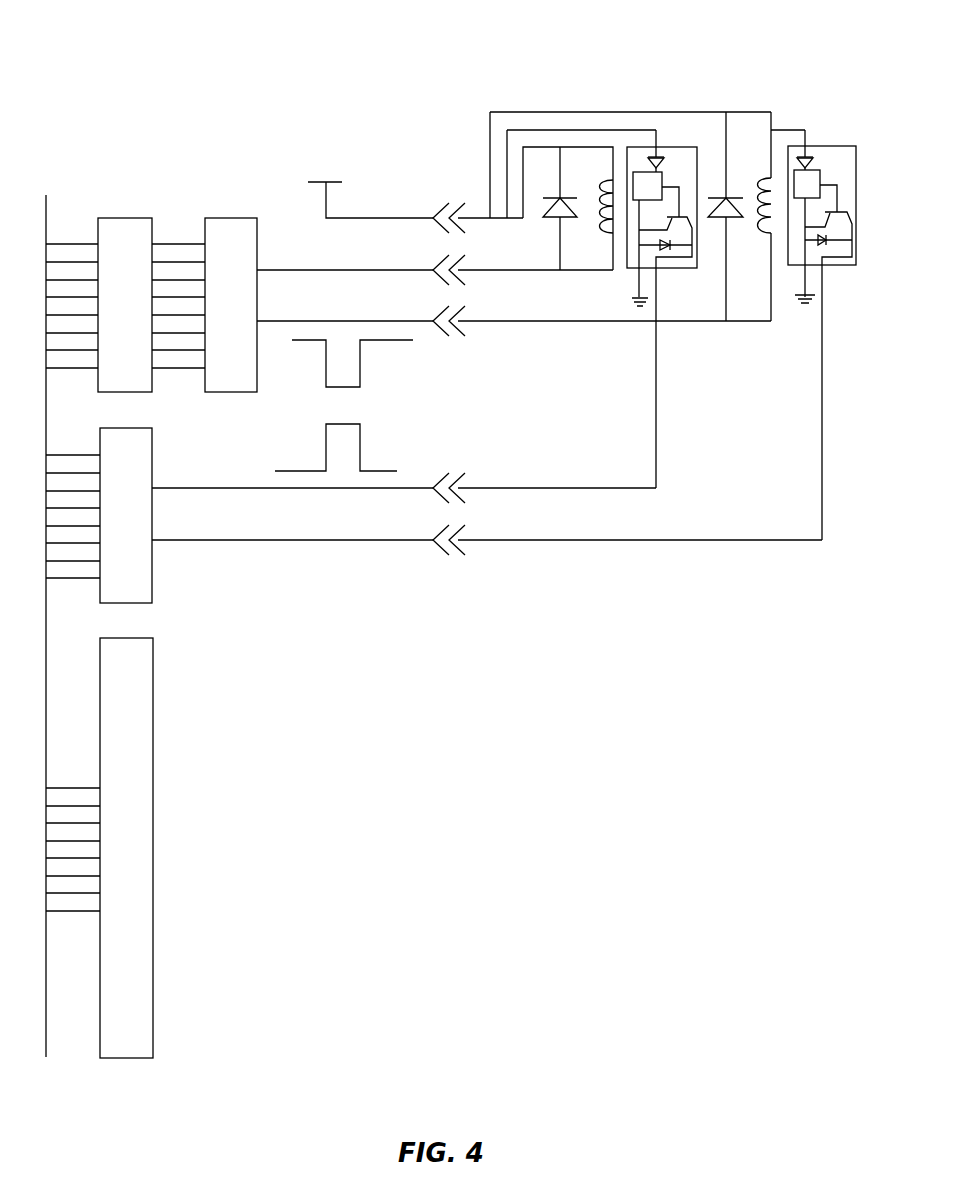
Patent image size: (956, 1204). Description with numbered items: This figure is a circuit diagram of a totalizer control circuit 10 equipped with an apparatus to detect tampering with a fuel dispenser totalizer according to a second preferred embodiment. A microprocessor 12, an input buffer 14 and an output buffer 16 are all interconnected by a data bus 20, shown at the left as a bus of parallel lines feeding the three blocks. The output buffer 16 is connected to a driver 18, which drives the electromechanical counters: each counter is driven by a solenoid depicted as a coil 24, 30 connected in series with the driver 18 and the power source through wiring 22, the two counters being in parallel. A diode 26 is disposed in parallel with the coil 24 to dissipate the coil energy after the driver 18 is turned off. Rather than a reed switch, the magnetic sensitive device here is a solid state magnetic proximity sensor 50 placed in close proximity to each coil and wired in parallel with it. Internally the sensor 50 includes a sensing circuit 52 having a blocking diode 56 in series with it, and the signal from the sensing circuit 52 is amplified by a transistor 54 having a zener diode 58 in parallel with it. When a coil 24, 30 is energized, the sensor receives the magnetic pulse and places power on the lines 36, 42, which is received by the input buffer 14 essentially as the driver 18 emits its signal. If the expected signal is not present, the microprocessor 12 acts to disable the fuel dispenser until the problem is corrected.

The totalizer control circuit 10 is at (145, 66).
The microprocessor 12 is at (152, 712).
The input buffer 14 is at (152, 462).
The output buffer 16 is at (117, 218).
The driver 18 is at (220, 218).
The data bus 20 is at (45, 218).
The wiring 22 is at (378, 218).
The coil 24 is at (597, 190).
The diode 26 is at (546, 210).
The coil 30 is at (755, 185).
The line 36 is at (630, 488).
The line 42 is at (665, 540).
The solid state magnetic proximity sensor 50 is at (826, 306).
The sensing circuit 52 is at (822, 172).
The transistor 54 is at (838, 212).
The blocking diode 56 is at (800, 160).
The zener diode 58 is at (818, 240).